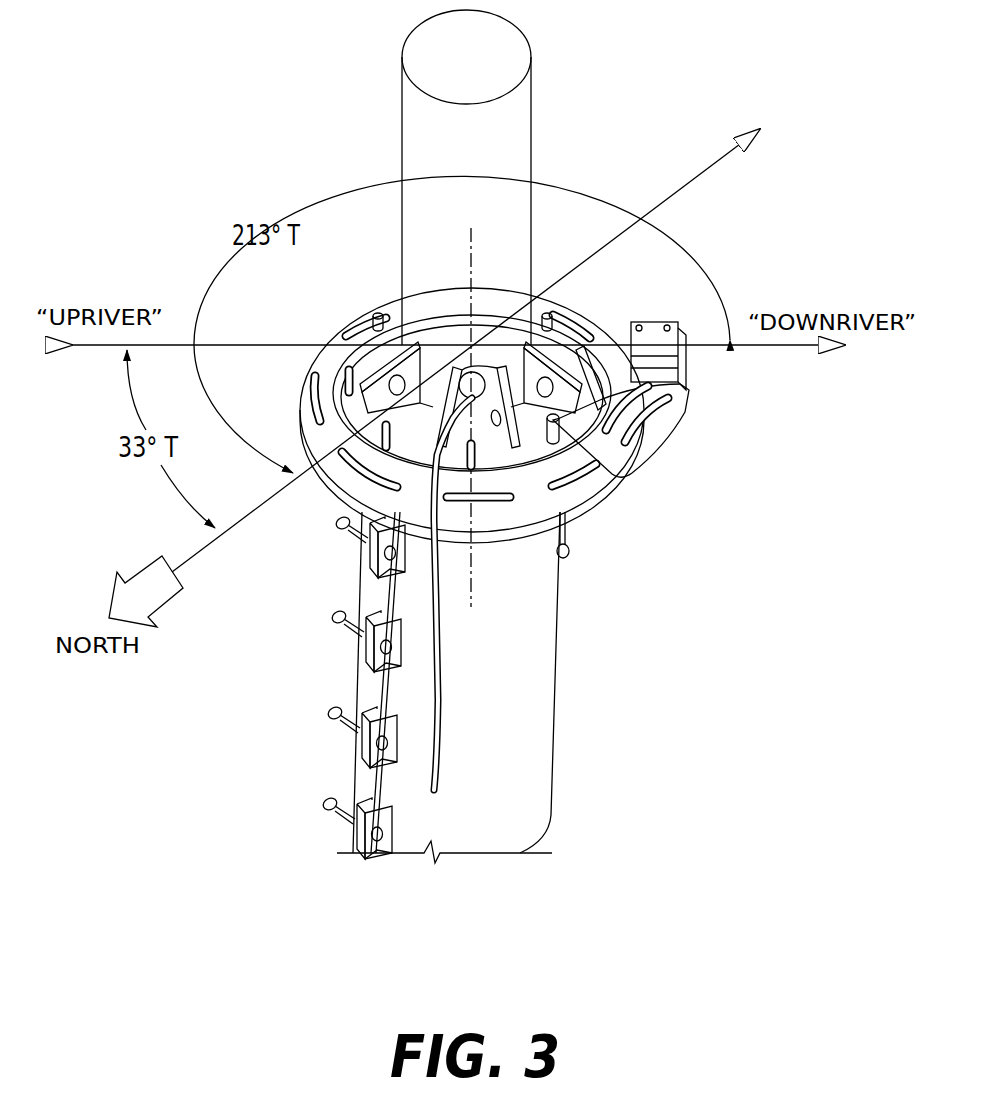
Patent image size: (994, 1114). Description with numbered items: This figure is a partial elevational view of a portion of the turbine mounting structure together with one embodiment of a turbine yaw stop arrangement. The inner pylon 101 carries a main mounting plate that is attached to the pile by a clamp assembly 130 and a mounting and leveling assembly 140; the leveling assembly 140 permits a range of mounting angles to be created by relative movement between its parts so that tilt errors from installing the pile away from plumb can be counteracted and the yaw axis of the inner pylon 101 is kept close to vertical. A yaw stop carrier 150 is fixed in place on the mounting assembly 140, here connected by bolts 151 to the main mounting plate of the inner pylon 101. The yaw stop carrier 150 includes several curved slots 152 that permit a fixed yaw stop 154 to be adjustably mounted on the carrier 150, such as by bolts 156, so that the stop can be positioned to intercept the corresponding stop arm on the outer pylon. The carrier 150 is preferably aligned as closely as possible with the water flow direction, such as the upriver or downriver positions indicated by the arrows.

The inner pylon 101 is at (402, 120).
The clamp assembly 130 is at (373, 655).
The mounting and leveling assembly 140 is at (362, 312).
The yaw stop carrier 150 is at (538, 523).
The bolts 151 is at (590, 352).
The curved slots 152 is at (670, 398).
The fixed yaw stop 154 is at (661, 366).
The bolts 156 is at (643, 325).